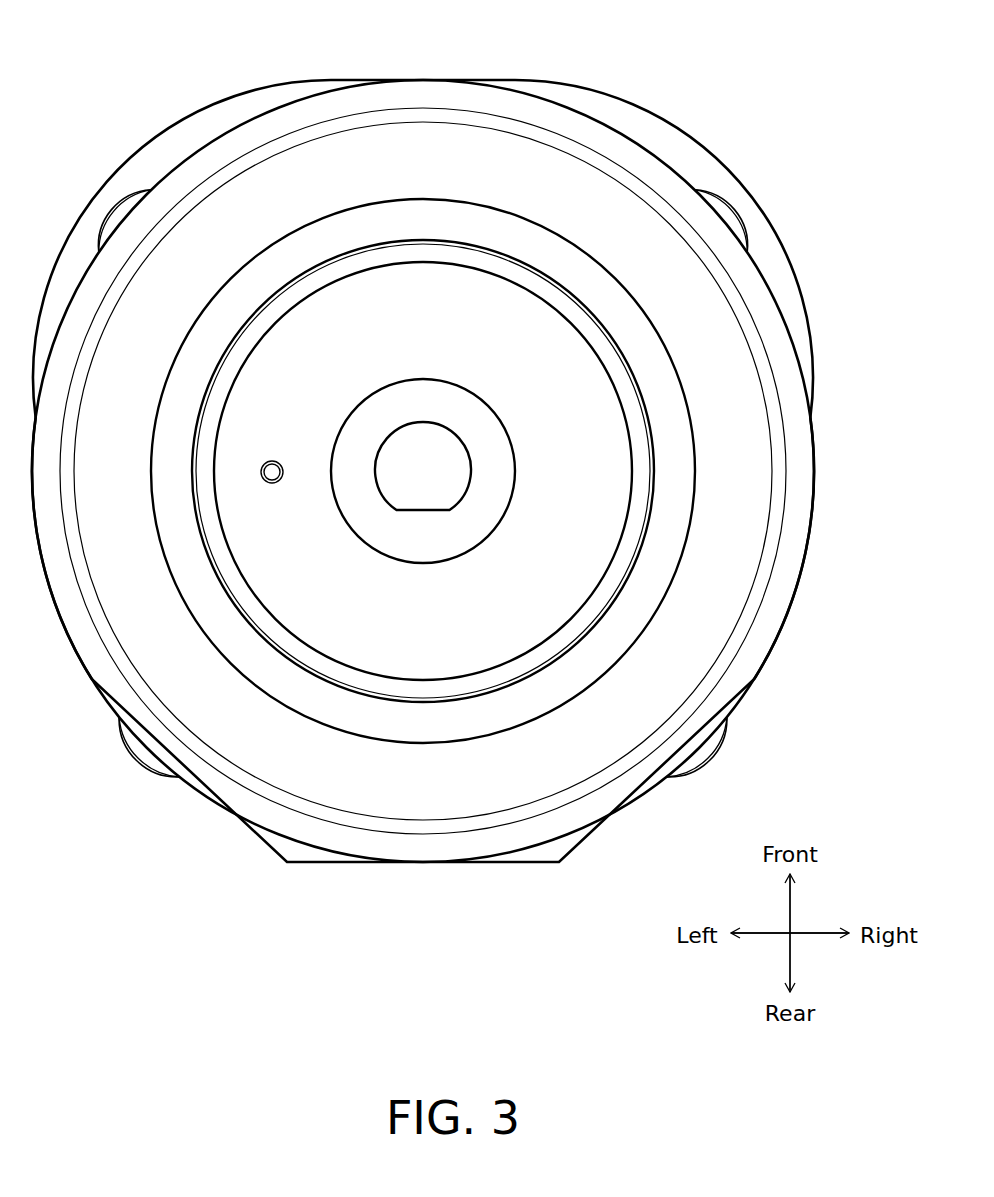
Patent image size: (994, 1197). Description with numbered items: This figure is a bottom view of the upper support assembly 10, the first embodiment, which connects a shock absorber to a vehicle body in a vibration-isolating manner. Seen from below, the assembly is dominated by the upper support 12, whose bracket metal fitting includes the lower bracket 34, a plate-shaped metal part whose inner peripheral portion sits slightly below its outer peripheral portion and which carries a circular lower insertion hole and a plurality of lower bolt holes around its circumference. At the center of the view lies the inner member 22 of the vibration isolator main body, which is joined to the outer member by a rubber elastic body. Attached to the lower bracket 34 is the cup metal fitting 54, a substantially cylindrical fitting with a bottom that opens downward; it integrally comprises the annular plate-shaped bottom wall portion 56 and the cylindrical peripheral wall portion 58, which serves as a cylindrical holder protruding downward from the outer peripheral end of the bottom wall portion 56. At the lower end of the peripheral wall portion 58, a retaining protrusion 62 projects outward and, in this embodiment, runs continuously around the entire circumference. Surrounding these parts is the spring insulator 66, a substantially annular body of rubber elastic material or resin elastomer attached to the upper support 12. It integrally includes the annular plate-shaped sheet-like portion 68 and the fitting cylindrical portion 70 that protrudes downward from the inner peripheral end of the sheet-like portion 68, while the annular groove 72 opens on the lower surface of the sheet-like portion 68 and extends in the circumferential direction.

The upper support assembly 10 is at (457, 442).
The upper support 12 is at (423, 442).
The inner member 22 is at (470, 422).
The lower bracket 34 is at (782, 273).
The cup metal fitting 54 is at (278, 664).
The bottom wall portion 56 is at (455, 630).
The peripheral wall portion 58 is at (373, 680).
The retaining protrusion 62 is at (245, 620).
The spring insulator 66 is at (189, 150).
The sheet-like portion 68 is at (282, 125).
The fitting cylindrical portion 70 is at (293, 258).
The annular groove 72 is at (377, 120).